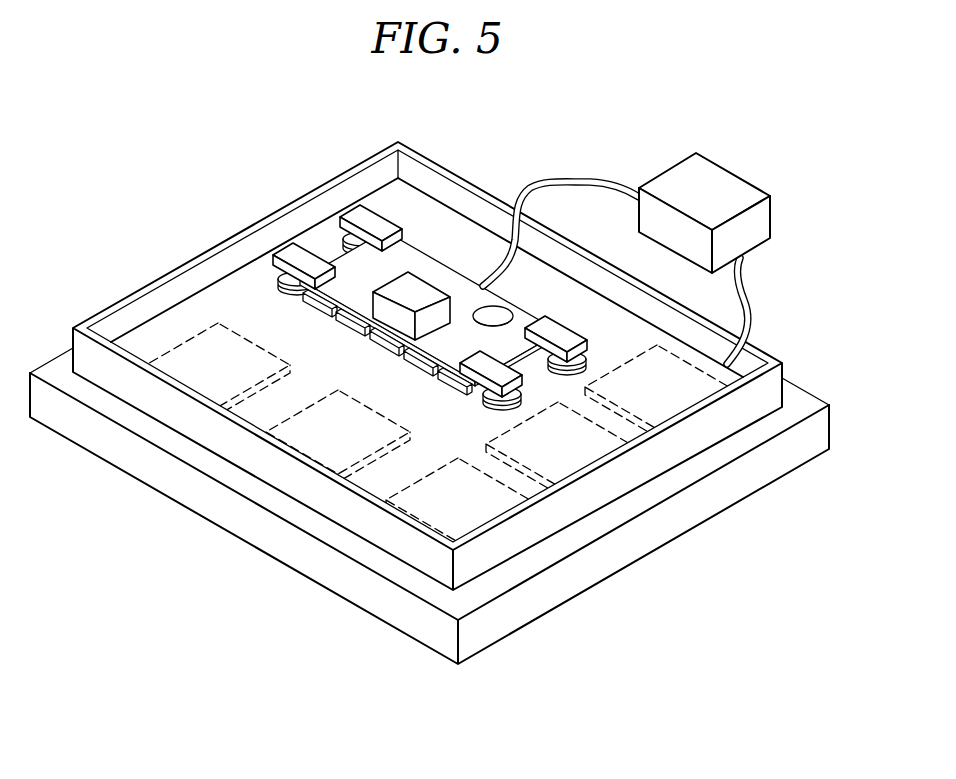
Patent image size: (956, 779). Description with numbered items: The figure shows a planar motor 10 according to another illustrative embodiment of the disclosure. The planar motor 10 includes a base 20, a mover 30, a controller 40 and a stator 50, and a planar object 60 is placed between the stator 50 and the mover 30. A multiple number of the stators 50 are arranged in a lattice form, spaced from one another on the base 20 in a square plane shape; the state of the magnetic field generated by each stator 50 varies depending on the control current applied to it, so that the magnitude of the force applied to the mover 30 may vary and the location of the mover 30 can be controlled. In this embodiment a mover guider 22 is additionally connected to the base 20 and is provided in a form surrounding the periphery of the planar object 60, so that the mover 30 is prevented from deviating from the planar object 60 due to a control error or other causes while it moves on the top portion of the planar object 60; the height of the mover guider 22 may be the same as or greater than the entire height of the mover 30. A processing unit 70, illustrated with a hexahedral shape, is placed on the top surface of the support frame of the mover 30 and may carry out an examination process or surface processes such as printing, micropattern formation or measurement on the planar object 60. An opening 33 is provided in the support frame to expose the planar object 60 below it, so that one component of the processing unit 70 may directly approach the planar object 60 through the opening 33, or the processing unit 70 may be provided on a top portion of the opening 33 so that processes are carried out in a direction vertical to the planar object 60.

The planar motor 10 is at (414, 770).
The base 20 is at (531, 598).
The mover guider 22 is at (720, 415).
The mover 30 is at (278, 293).
The opening 33 is at (503, 306).
The controller 40 is at (758, 213).
The stator 50 is at (633, 418).
The planar object 60 is at (468, 233).
The processing unit 70 is at (412, 302).